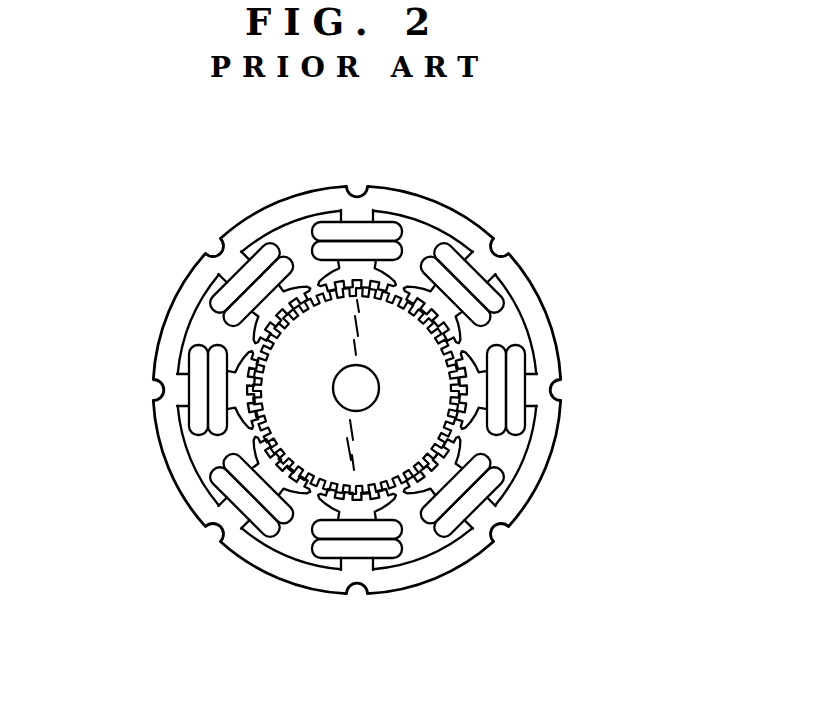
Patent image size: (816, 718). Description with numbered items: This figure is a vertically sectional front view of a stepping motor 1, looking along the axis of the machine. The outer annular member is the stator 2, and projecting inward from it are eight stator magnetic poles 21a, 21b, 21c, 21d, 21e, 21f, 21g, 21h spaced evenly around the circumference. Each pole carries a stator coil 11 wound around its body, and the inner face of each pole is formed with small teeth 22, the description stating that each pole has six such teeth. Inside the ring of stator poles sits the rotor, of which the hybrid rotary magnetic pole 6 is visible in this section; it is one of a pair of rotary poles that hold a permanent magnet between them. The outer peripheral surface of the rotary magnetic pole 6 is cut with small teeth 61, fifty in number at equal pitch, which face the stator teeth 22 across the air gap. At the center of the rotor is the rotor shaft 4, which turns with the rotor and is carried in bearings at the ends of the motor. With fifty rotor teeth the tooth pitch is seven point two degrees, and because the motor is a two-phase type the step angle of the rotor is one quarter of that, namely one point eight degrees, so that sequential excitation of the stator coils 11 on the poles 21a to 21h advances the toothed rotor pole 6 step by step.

The stepping motor 1 is at (283, 190).
The stator 2 is at (394, 197).
The stator magnetic pole 21a is at (370, 270).
The stator magnetic pole 21b is at (448, 305).
The stator magnetic pole 21c is at (530, 417).
The stator magnetic pole 21d is at (448, 468).
The stator magnetic pole 21e is at (362, 513).
The stator magnetic pole 21f is at (270, 483).
The stator magnetic pole 21g is at (233, 378).
The stator magnetic pole 21h is at (273, 298).
The small teeth 22 is at (462, 340).
The stator coil 11 is at (478, 398).
The hybrid rotary magnetic pole 6 is at (282, 358).
The small teeth 61 is at (253, 432).
The rotor shaft 4 is at (370, 395).